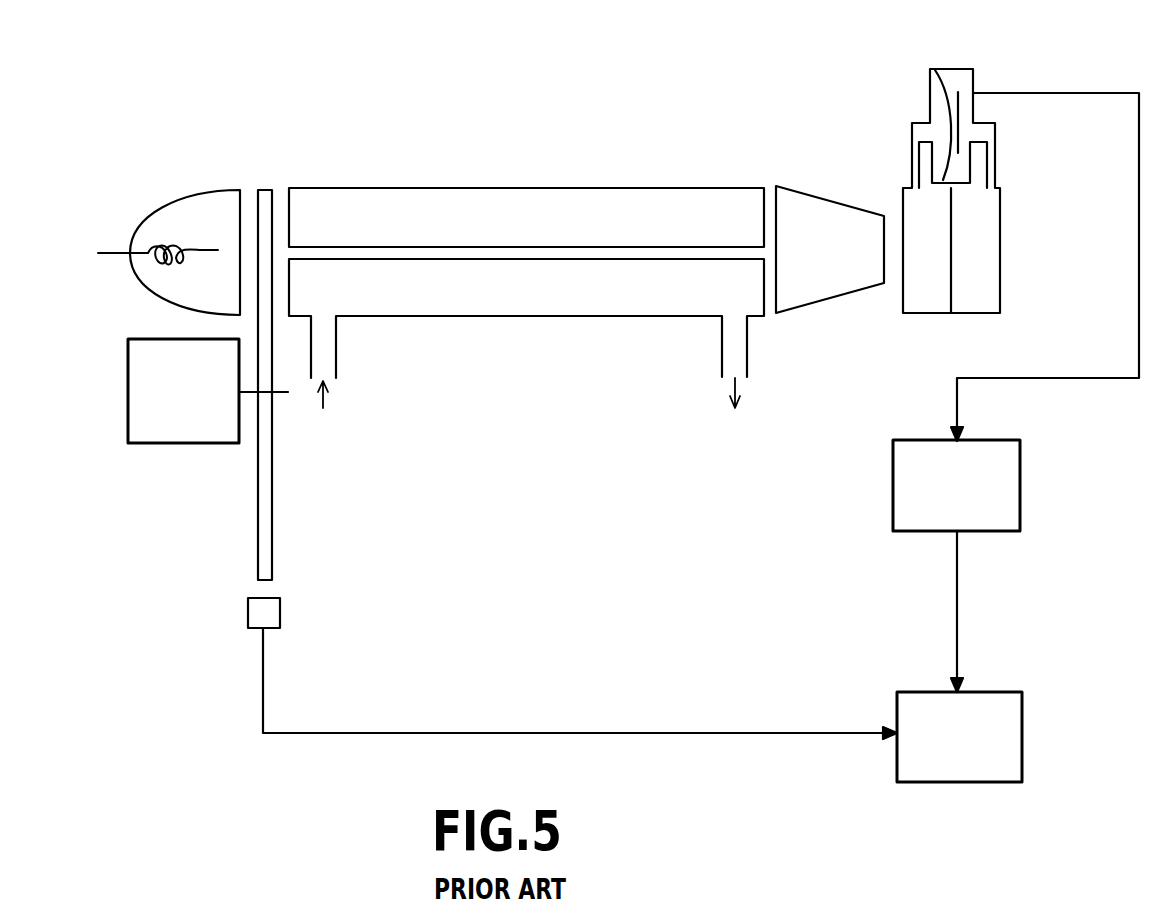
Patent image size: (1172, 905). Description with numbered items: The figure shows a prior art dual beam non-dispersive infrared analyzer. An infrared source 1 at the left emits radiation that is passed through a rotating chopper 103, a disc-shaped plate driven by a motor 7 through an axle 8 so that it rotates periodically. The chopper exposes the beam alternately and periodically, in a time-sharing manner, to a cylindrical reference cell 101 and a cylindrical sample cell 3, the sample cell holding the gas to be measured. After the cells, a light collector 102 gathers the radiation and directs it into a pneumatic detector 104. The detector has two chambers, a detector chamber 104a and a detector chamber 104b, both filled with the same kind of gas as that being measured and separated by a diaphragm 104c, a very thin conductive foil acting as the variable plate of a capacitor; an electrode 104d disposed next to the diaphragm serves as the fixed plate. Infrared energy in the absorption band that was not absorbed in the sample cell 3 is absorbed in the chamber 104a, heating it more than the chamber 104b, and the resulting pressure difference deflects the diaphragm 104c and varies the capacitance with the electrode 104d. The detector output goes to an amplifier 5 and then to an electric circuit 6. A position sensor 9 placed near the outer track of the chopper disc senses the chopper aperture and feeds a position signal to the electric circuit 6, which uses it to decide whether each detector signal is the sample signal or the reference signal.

The infrared source 1 is at (173, 215).
The cylindrical sample cell 3 is at (437, 309).
The amplifier 5 is at (1005, 485).
The electric circuit 6 is at (1005, 722).
The motor 7 is at (135, 401).
The axle 8 is at (247, 394).
The position sensor 9 is at (268, 612).
The cylindrical reference cell 101 is at (429, 198).
The light collector 102 is at (818, 215).
The rotating chopper 103 is at (265, 187).
The pneumatic detector 104 is at (967, 194).
The detector chamber 104a is at (910, 310).
The detector chamber 104b is at (985, 288).
The diaphragm 104c is at (948, 95).
The electrode 104d is at (980, 94).